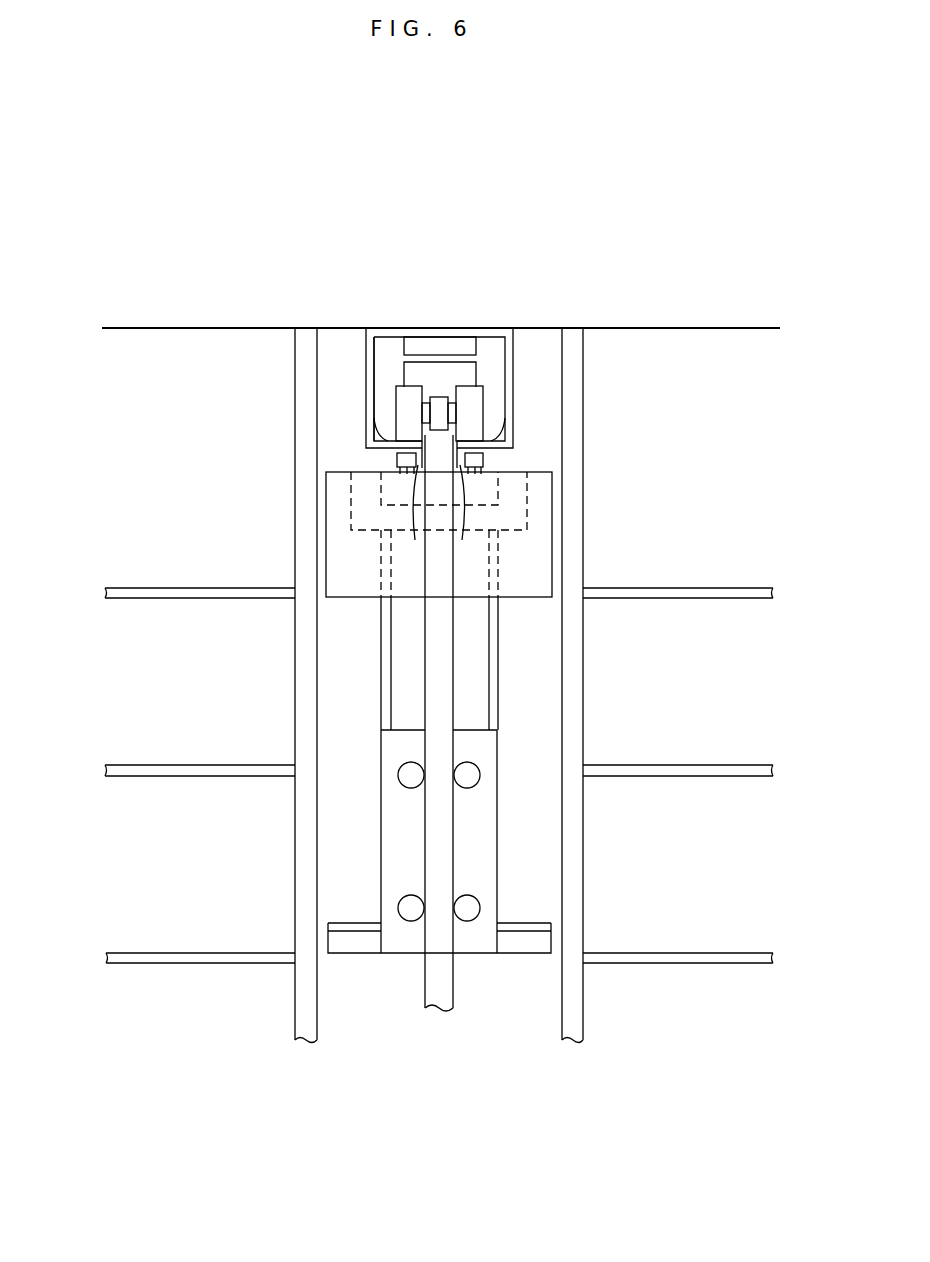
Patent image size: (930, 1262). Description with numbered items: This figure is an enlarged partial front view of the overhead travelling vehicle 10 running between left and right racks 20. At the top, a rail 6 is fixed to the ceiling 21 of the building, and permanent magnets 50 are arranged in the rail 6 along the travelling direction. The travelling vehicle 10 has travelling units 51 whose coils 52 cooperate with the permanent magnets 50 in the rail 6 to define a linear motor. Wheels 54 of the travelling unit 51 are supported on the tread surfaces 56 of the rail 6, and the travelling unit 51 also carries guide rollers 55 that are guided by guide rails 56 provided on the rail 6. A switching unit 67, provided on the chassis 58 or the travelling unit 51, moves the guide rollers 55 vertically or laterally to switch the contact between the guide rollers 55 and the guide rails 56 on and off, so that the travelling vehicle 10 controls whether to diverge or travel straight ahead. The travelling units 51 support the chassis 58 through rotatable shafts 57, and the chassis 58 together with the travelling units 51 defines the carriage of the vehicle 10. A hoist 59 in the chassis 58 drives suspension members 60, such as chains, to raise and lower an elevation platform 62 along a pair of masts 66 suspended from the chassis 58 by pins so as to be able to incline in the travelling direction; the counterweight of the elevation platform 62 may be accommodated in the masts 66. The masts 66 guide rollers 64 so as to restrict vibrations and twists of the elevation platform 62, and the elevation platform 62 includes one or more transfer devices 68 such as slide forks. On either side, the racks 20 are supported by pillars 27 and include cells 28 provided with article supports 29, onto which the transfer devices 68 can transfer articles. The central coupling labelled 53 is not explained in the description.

The rail 6 is at (487, 326).
The overhead travelling vehicle 10 is at (466, 1135).
The rack 20 is at (110, 842).
The ceiling 21 is at (678, 327).
The pillar 27 is at (306, 1003).
The cell 28 is at (128, 670).
The article support 29 is at (199, 765).
The permanent magnet 50 is at (438, 345).
The travelling unit 51 is at (400, 372).
The coil 52 is at (462, 375).
The coupling member 53 is at (383, 437).
The wheel 54 is at (406, 410).
The guide roller 55 is at (399, 459).
The guide rail 56 is at (442, 519).
The rotatable shaft 57 is at (441, 457).
The chassis 58 is at (538, 543).
The hoist 59 is at (520, 509).
The suspension member 60 is at (381, 672).
The elevation platform 62 is at (486, 827).
The roller 64 is at (408, 775).
The mast 66 is at (435, 985).
The switching unit 67 is at (497, 488).
The transfer device 68 is at (520, 930).